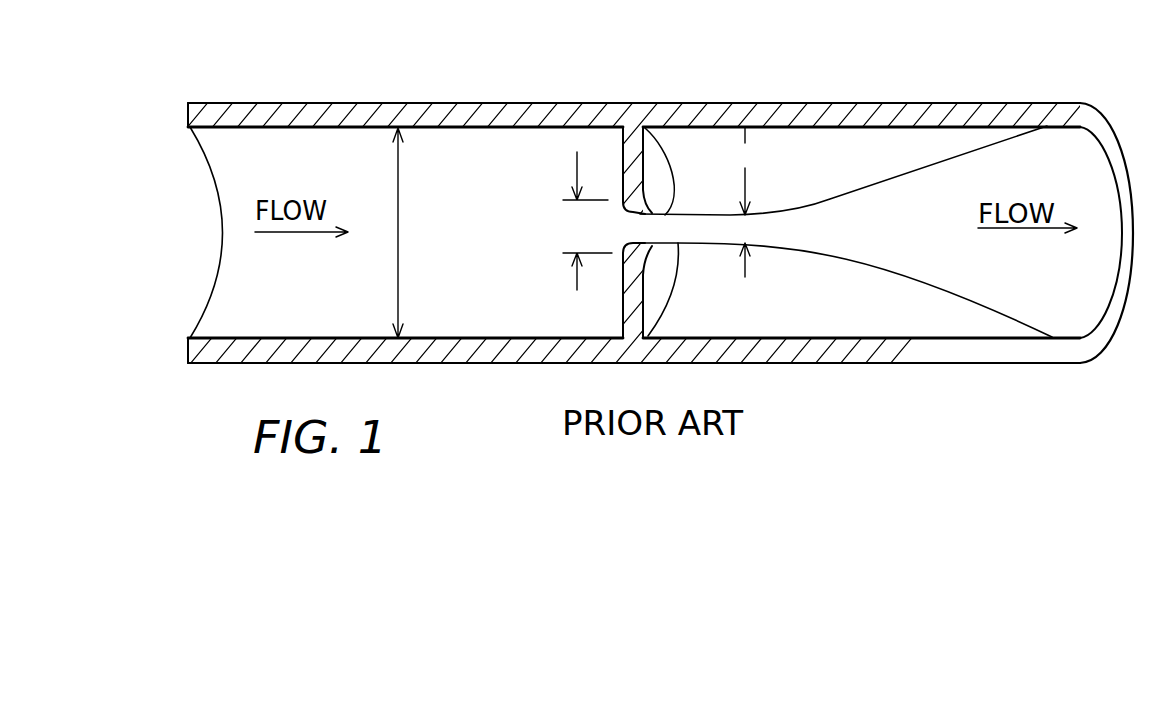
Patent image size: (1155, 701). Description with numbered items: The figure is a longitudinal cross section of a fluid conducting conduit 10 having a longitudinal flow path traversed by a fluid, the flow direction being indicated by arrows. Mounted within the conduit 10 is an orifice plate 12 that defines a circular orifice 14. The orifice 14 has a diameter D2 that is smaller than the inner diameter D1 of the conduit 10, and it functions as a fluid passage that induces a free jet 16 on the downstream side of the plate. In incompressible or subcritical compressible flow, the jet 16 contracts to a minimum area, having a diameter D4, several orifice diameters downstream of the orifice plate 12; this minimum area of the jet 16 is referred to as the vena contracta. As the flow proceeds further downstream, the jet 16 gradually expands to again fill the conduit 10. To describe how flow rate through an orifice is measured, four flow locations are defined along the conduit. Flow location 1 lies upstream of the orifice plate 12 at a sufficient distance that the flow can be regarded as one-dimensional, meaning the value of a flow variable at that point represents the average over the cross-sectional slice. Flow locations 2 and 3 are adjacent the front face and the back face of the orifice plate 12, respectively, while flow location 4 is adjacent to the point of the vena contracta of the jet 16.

The conduit 10 is at (333, 103).
The orifice plate 12 is at (623, 152).
The orifice 14 is at (633, 229).
The free jet 16 is at (807, 247).
The flow location 1 is at (375, 321).
The flow location 2 is at (601, 322).
The flow location 3 is at (675, 319).
The flow location 4 is at (768, 132).
The inner diameter of conduit D1 is at (398, 190).
The orifice diameter D2 is at (577, 165).
The vena contracta diameter D4 is at (745, 177).